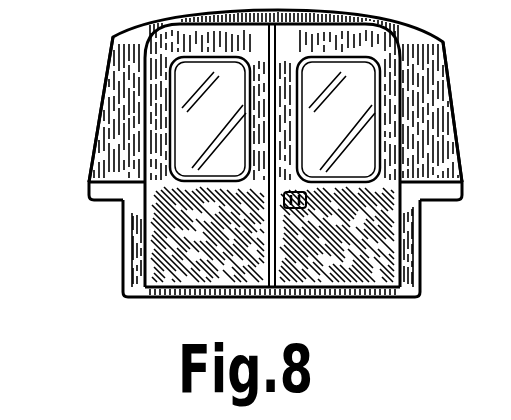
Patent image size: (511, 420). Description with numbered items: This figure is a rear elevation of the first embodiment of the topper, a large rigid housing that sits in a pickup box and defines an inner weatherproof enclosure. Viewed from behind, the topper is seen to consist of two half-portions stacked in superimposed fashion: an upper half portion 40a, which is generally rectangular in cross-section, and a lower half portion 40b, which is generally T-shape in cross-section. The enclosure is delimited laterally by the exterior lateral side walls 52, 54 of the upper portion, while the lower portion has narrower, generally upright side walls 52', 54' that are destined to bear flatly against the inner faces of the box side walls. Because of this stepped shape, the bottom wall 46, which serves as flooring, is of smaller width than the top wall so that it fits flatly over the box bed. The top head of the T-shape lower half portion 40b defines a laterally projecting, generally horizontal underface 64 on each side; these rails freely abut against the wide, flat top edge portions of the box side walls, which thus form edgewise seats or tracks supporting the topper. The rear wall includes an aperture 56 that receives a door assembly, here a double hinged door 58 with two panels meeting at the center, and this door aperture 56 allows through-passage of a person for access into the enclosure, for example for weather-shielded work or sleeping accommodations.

The upper half portion 40a is at (118, 143).
The lower half portion 40b is at (130, 226).
The bottom wall 46 is at (352, 300).
The lateral side wall 52 is at (100, 109).
The side wall 52' is at (101, 247).
The lateral side wall 54 is at (444, 112).
The side wall 54' is at (442, 247).
The aperture 56 is at (404, 257).
The double hinged door 58 is at (243, 266).
The underface 64 is at (107, 202).